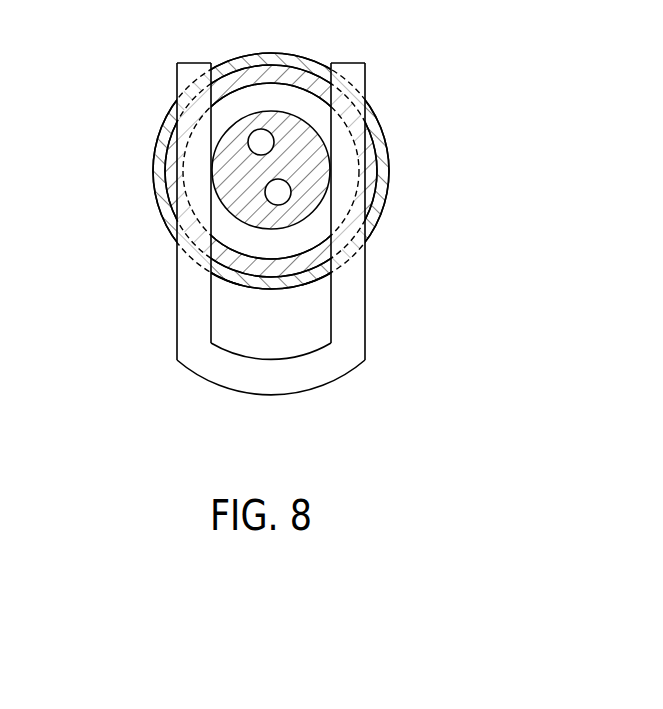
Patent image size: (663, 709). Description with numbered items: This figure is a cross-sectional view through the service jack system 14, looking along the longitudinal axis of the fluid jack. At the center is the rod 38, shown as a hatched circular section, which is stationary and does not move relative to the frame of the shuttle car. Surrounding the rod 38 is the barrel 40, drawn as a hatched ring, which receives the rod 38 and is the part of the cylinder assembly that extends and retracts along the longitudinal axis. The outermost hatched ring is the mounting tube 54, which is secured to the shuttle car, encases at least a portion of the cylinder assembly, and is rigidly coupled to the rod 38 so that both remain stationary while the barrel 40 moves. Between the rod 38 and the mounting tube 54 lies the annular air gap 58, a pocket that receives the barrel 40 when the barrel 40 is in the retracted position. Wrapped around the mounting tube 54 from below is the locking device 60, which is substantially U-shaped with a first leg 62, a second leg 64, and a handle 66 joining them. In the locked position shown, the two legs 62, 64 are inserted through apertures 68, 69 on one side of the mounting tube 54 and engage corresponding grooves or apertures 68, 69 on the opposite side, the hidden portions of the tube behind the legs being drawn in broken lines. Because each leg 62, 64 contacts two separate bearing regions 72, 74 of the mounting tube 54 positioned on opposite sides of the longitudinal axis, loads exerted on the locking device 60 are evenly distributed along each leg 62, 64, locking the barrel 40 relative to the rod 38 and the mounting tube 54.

The jack system 14 is at (466, 92).
The rod 38 is at (267, 122).
The barrel 40 is at (278, 72).
The mounting tube 54 is at (155, 173).
The annular air gap 58 is at (225, 112).
The locking device 60 is at (283, 226).
The first leg 62 is at (190, 325).
The second leg 64 is at (357, 330).
The handle 66 is at (247, 378).
The aperture 68 is at (188, 254).
The aperture 69 is at (206, 75).
The bearing region 72 is at (200, 266).
The bearing region 74 is at (192, 84).